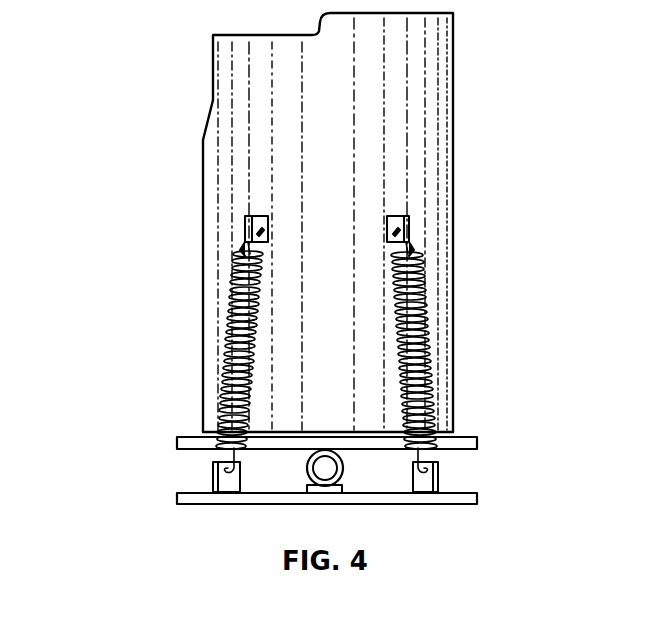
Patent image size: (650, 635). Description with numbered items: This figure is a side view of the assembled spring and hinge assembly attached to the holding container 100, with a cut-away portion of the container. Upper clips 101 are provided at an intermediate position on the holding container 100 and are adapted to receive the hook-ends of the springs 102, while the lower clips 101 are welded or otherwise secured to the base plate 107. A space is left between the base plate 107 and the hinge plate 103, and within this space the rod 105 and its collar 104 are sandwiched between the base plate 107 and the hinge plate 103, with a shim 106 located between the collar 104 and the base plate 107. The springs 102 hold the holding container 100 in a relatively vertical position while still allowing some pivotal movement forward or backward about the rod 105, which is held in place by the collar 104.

The holding container 100 is at (242, 85).
The clips 101 is at (238, 222).
The springs 102 is at (222, 282).
The hinge plate 103 is at (172, 435).
The collar 104 is at (330, 443).
The rod 105 is at (340, 464).
The shim 106 is at (354, 485).
The base plate 107 is at (193, 498).